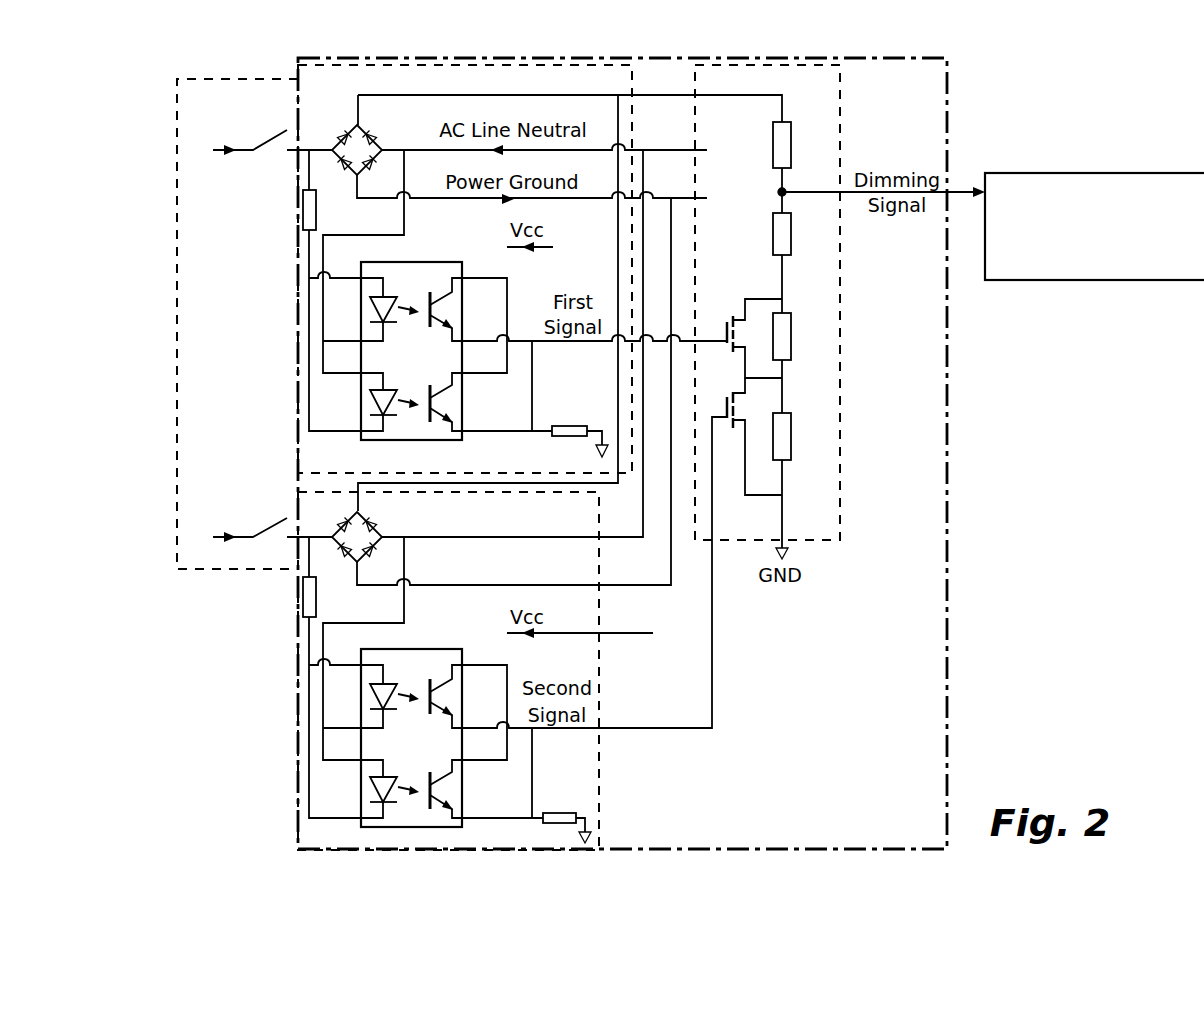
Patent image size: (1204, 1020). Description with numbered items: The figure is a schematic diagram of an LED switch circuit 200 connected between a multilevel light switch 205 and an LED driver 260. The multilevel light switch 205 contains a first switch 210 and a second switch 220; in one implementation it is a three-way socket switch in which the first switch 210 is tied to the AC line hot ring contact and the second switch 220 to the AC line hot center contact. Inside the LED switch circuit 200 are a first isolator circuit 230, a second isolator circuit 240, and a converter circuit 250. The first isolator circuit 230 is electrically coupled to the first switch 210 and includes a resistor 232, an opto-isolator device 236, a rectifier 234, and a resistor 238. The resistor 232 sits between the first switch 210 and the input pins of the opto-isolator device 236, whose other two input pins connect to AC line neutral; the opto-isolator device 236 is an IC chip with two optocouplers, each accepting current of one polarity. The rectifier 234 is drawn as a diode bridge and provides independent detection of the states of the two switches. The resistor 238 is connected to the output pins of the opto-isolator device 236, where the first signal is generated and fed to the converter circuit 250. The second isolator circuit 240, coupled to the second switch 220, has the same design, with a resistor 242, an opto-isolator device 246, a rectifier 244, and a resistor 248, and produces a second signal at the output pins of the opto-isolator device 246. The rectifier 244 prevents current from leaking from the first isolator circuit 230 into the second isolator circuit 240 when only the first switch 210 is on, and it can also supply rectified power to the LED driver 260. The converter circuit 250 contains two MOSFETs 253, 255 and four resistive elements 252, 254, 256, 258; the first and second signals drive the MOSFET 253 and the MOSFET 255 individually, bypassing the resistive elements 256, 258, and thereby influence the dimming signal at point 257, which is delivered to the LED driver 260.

The LED switch circuit 200 is at (958, 78).
The multilevel light switch 205 is at (176, 355).
The first switch 210 is at (220, 153).
The second switch 220 is at (220, 535).
The first isolator circuit 230 is at (337, 67).
The resistor 232 is at (317, 213).
The rectifier 234 is at (362, 127).
The opto-isolator device 236 is at (427, 261).
The resistor 238 is at (567, 425).
The second isolator circuit 240 is at (600, 776).
The resistor 242 is at (317, 602).
The rectifier 244 is at (362, 516).
The opto-isolator device 246 is at (426, 648).
The resistor 248 is at (560, 811).
The converter circuit 250 is at (842, 515).
The resistive element 252 is at (791, 150).
The MOSFET 253 is at (733, 320).
The resistive element 254 is at (791, 250).
The MOSFET 255 is at (733, 393).
The bypassing resistive element 256 is at (791, 352).
The point 257 is at (778, 191).
The bypassing resistive element 258 is at (791, 452).
The LED driver 260 is at (1132, 172).